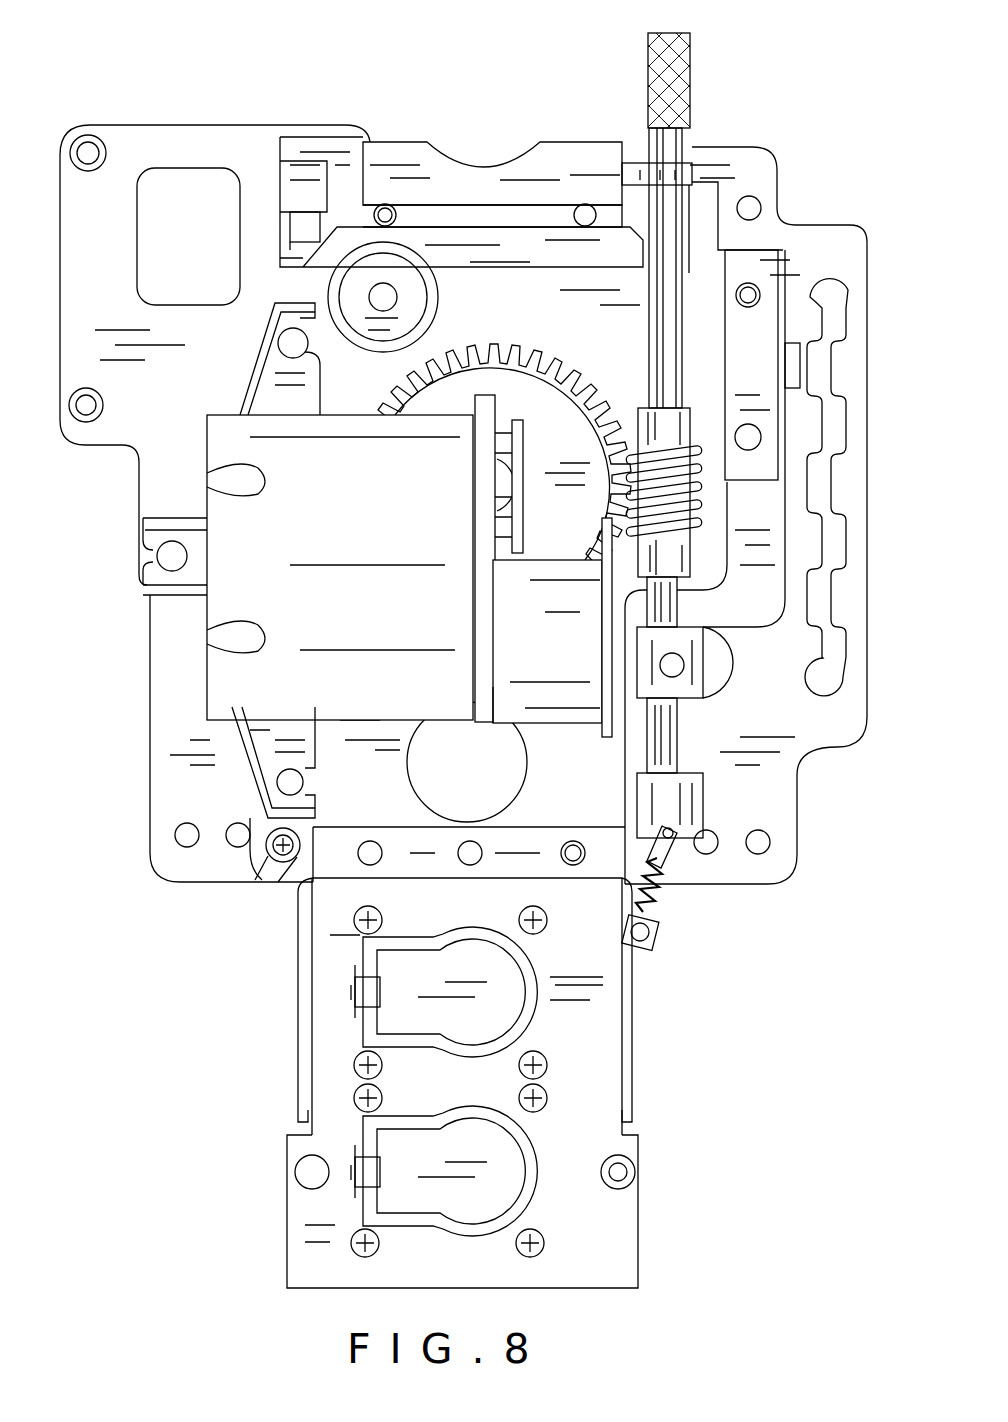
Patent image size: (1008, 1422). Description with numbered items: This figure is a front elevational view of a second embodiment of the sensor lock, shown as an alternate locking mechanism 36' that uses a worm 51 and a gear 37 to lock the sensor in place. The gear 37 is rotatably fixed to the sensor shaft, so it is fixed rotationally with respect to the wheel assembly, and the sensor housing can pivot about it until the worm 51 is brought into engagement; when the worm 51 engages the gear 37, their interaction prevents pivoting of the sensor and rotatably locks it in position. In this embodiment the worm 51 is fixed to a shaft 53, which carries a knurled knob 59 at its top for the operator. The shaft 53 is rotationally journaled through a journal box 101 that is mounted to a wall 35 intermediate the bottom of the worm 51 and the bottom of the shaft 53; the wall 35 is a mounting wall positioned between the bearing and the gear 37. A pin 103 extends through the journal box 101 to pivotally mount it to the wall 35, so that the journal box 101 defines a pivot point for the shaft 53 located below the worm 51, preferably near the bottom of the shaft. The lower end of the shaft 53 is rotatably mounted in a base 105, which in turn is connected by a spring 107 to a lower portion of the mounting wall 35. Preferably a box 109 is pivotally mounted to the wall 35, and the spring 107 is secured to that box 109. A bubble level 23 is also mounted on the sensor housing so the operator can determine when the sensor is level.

The bubble level 23 is at (425, 142).
The wall 35 is at (742, 158).
The locking mechanism 36' is at (760, 534).
The gear 37 is at (540, 350).
The worm 51 is at (633, 440).
The shaft 53 is at (687, 138).
The knurled knob 59 is at (690, 48).
The journal box 101 is at (683, 690).
The pin 103 is at (677, 668).
The base 105 is at (695, 797).
The spring 107 is at (658, 893).
The box 109 is at (651, 940).